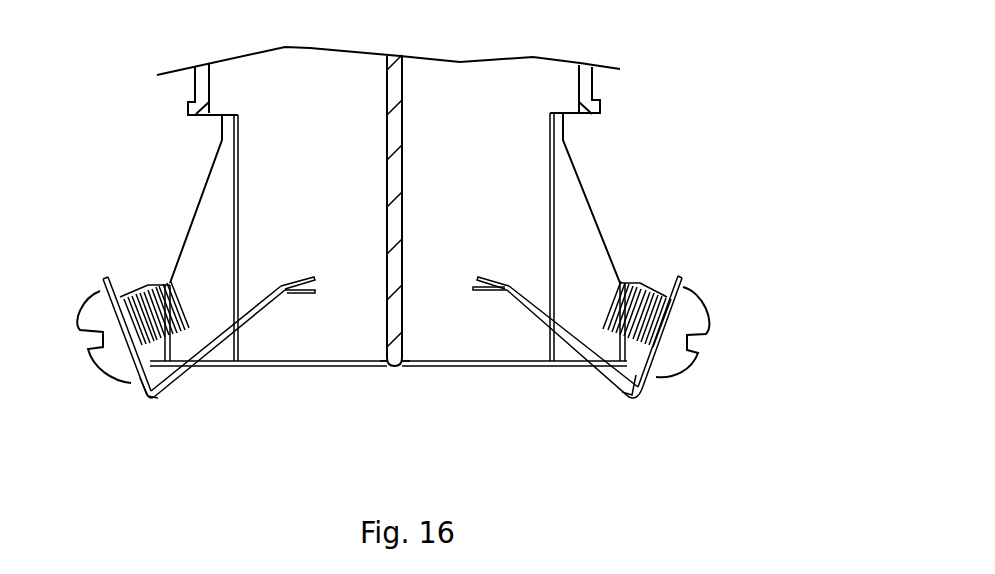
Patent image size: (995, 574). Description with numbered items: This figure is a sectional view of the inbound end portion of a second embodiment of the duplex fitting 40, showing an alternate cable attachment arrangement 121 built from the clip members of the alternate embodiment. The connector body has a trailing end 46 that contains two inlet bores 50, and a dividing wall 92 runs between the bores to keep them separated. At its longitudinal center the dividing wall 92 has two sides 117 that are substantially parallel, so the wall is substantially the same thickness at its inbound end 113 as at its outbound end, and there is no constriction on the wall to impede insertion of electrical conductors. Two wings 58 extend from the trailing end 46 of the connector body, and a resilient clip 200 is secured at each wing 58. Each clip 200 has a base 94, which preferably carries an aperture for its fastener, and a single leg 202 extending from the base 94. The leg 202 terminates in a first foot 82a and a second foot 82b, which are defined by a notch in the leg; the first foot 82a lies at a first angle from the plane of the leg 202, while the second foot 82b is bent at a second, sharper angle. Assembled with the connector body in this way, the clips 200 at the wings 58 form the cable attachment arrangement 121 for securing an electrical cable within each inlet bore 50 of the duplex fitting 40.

The duplex fitting 40 is at (116, 74).
The sides of dividing wall 117 is at (376, 105).
The dividing wall 92 is at (393, 125).
The inlet bores 50 is at (315, 191).
The clip 200 is at (105, 280).
The first foot 82a is at (478, 280).
The second foot 82b is at (475, 288).
The wings 58 is at (650, 298).
The leg 202 is at (195, 363).
The inbound end 113 is at (395, 368).
The trailing end 46 is at (507, 368).
The cable attachment arrangement 121 is at (176, 423).
The base 94 is at (653, 380).